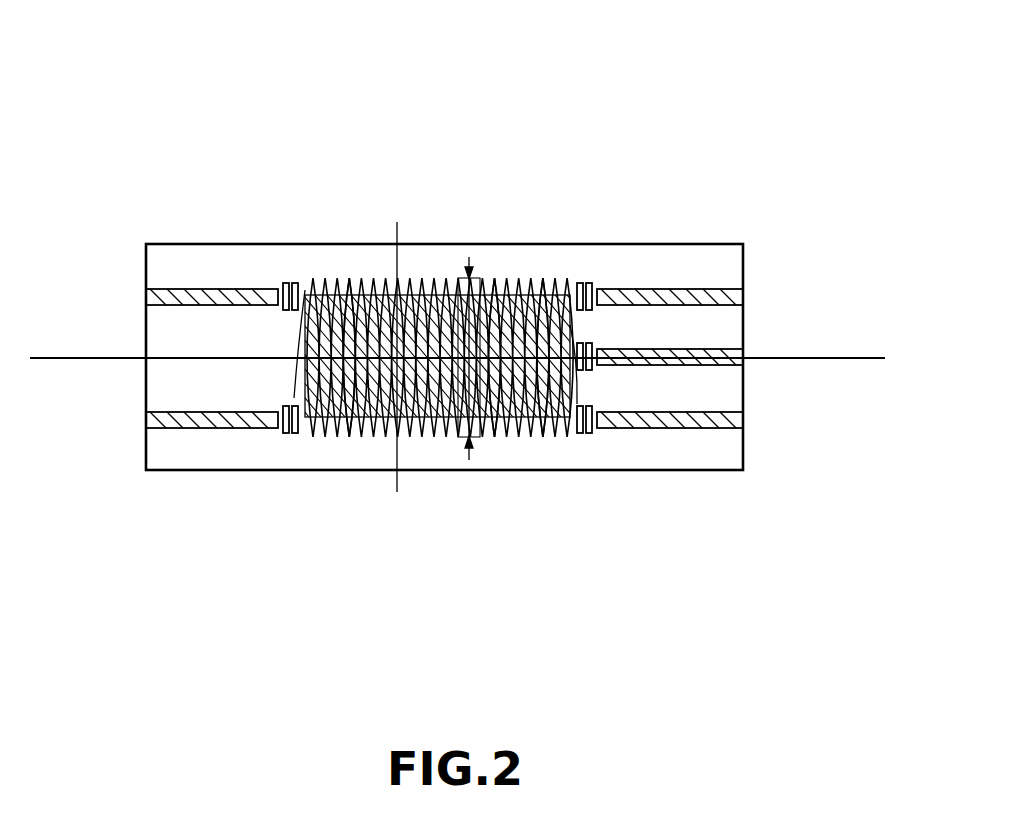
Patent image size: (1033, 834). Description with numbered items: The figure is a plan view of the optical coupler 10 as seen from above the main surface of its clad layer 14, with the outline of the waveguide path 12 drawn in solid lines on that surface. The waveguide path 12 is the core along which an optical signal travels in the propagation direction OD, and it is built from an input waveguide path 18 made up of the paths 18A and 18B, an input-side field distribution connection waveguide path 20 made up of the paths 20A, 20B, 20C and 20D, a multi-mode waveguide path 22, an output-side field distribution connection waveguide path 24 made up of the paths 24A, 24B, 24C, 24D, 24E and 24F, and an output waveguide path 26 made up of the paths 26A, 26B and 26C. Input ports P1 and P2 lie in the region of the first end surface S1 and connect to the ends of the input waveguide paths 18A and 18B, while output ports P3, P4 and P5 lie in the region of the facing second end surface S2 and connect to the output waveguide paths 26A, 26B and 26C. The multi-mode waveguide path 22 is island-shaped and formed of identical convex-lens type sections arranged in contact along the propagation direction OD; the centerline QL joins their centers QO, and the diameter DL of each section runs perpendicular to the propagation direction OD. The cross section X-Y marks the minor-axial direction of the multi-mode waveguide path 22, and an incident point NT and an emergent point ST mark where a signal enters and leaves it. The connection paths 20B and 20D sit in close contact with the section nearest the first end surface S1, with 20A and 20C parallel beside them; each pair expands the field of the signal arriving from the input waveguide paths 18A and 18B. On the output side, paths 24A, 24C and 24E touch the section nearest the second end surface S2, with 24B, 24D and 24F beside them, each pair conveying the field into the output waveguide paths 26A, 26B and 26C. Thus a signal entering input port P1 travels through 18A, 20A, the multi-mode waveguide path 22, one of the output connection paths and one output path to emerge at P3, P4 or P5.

The optical coupler 10 is at (750, 68).
The waveguide path 12 is at (767, 110).
The clad layer 14 is at (200, 455).
The input waveguide path 18 is at (181, 273).
The input waveguide path 18A is at (200, 288).
The input waveguide path 18B is at (172, 416).
The input-side field distribution connection waveguide path 20 is at (305, 275).
The input-side field distribution connection waveguide path 20A is at (284, 284).
The input-side field distribution connection waveguide path 20B is at (293, 283).
The input-side field distribution connection waveguide path 20C is at (285, 437).
The input-side field distribution connection waveguide path 20D is at (367, 300).
The multi-mode waveguide path 22 is at (445, 283).
The output-side field distribution connection waveguide path 24 is at (558, 277).
The output-side field distribution connection waveguide path 24A is at (578, 283).
The output-side field distribution connection waveguide path 24B is at (590, 283).
The output-side field distribution connection waveguide path 24C is at (542, 283).
The output-side field distribution connection waveguide path 24D is at (580, 348).
The output-side field distribution connection waveguide path 24E is at (495, 287).
The output-side field distribution connection waveguide path 24F is at (617, 317).
The output waveguide path 26 is at (698, 272).
The output waveguide path 26A is at (672, 289).
The output waveguide path 26B is at (723, 347).
The output waveguide path 26C is at (720, 410).
The input port P1 is at (146, 298).
The input port P2 is at (146, 419).
The output port P3 is at (745, 295).
The output port P4 is at (745, 365).
The output port P5 is at (745, 420).
The first end surface S1 is at (136, 388).
The second end surface S2 is at (757, 267).
The centerline QL is at (478, 355).
The propagation direction OD is at (760, 513).
The cross section X-Y X is at (397, 342).
The cross section X- Y is at (434, 392).
The incident point NT is at (288, 433).
The center QO is at (330, 437).
The diameter DL is at (533, 437).
The emergent point ST is at (590, 432).